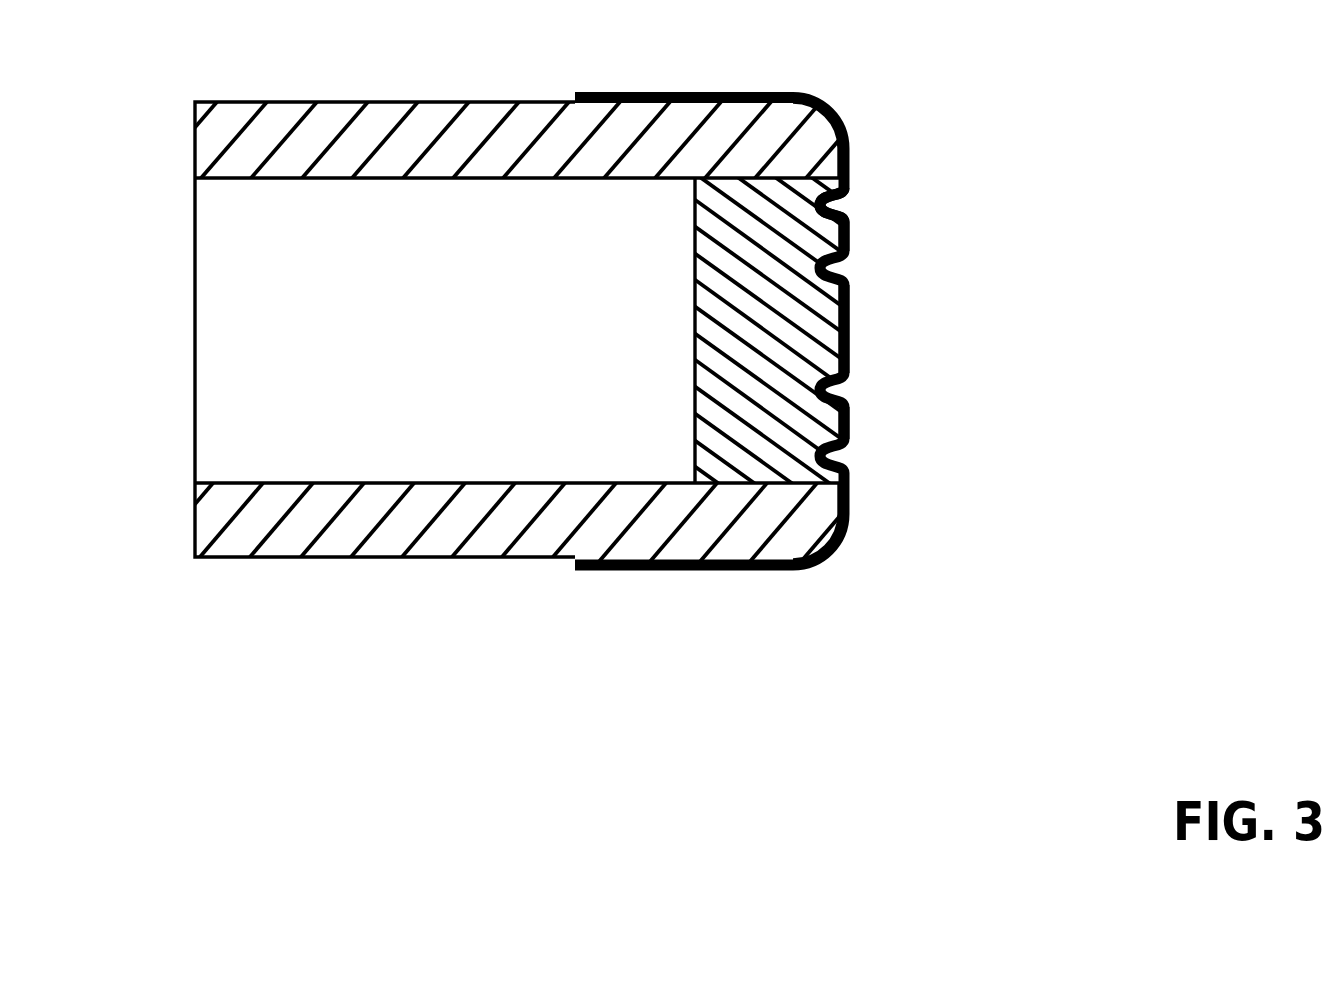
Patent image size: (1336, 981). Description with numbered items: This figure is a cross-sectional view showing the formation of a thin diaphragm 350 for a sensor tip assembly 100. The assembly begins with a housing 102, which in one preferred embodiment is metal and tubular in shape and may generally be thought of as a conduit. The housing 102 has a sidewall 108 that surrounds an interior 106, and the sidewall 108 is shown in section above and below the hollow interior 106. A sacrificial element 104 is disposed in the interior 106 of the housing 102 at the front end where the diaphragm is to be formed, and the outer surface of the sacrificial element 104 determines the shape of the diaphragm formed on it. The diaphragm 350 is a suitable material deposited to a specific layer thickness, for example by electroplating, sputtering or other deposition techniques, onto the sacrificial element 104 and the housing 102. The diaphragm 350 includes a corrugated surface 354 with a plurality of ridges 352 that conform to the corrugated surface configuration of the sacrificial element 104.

The sensor tip assembly 100 is at (947, 731).
The housing 102 is at (536, 296).
The sacrificial element 104 is at (694, 232).
The interior 106 is at (234, 355).
The sidewall 108 is at (314, 117).
The diaphragm 350 is at (677, 92).
The plurality of ridges 352 is at (874, 393).
The corrugated surface 354 is at (848, 222).